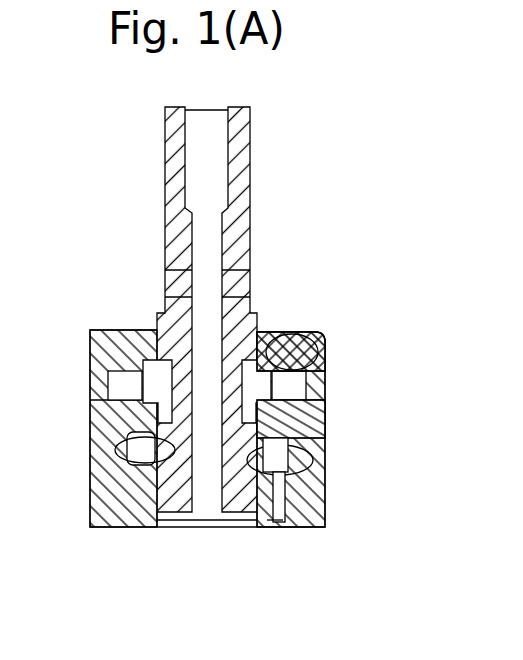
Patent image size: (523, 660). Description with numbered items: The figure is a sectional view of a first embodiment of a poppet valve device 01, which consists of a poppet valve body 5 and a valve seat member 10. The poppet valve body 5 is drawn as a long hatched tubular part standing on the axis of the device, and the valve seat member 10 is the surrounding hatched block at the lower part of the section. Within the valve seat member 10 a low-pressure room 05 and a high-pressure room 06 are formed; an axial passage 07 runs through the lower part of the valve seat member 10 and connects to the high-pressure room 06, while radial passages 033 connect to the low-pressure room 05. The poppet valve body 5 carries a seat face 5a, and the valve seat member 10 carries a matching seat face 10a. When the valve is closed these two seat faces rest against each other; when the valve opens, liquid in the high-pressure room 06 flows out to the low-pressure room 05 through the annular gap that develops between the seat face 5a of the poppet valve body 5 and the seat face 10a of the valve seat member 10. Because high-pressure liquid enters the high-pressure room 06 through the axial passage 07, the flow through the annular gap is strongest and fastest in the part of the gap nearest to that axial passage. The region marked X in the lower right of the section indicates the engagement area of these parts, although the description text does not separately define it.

The poppet valve device 01 is at (112, 274).
The poppet valve body 5 is at (240, 218).
The low-pressure room 05 is at (260, 388).
The radial passages 033 is at (290, 382).
The seat face of the valve seat member 10a is at (98, 416).
The seat face of the poppet valve body 5a is at (150, 458).
The high-pressure room 06 is at (323, 438).
The engagement region X is at (327, 458).
The valve seat member 10 is at (303, 506).
The axial passage 07 is at (275, 523).